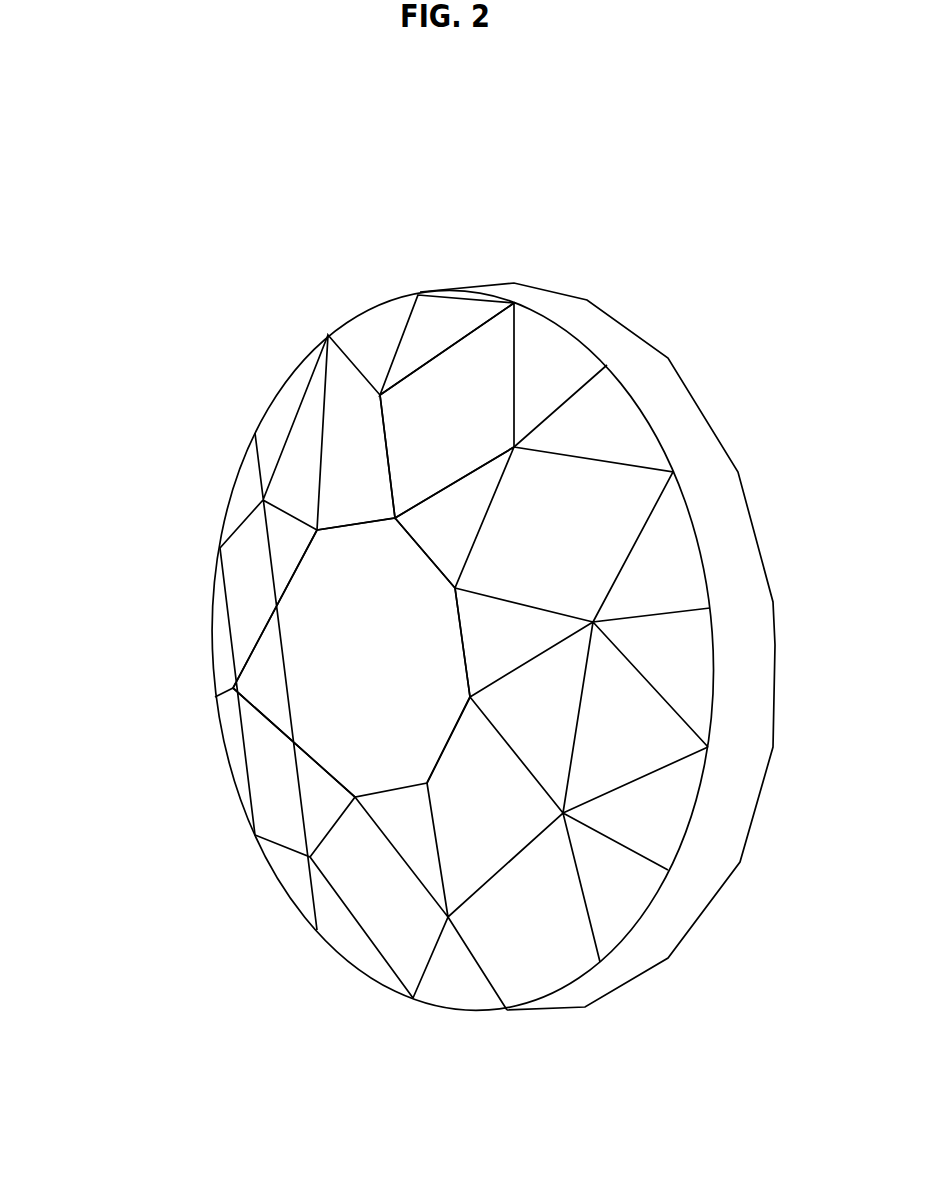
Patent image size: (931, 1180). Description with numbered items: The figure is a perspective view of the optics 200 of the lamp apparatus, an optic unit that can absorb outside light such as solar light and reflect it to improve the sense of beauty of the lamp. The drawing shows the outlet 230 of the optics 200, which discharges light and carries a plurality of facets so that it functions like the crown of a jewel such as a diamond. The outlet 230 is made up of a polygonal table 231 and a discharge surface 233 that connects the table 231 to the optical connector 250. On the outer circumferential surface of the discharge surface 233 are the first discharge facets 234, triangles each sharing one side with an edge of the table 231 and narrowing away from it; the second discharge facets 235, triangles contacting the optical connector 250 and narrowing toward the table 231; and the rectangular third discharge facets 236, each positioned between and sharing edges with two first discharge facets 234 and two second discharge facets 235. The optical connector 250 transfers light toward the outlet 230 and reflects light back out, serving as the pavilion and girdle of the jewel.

The optics 200 is at (832, 142).
The outlet 230 is at (156, 481).
The table 231 is at (347, 633).
The discharge surface 233 is at (355, 170).
The first discharge facets 234 is at (370, 483).
The second discharge facets 235 is at (430, 320).
The third discharge facets 236 is at (425, 410).
The optical connector 250 is at (635, 352).